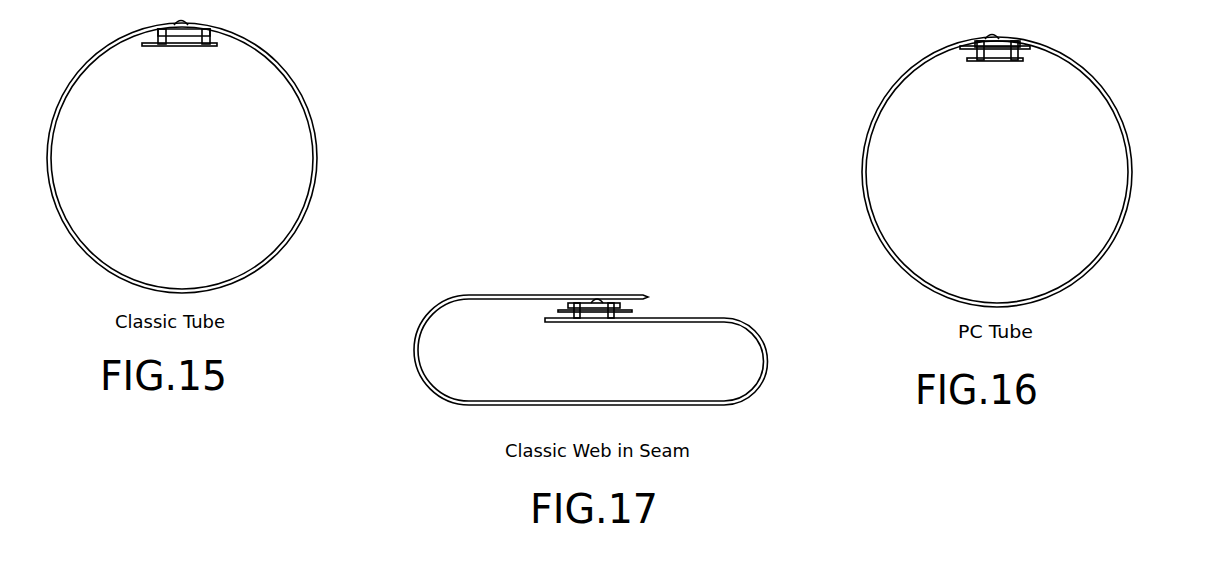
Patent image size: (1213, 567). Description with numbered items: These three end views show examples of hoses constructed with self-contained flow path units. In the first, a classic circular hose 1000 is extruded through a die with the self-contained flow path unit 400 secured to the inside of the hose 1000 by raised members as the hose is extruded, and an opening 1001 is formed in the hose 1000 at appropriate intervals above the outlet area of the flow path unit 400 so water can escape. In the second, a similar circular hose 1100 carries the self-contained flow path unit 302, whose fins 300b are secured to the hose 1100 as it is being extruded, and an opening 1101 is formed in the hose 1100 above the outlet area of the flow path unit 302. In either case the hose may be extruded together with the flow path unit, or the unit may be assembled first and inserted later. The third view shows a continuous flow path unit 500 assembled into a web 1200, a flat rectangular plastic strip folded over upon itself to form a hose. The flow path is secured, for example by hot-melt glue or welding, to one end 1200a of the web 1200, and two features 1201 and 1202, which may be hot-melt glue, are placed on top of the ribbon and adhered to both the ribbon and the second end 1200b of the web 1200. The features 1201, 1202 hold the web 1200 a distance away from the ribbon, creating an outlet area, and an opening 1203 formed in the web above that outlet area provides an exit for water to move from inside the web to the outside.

In FIG. 15, the hose 1000 is at (317, 166).
In FIG. 15, the opening 1001 is at (180, 22).
In FIG. 15, the self-contained flow path unit 400 is at (195, 54).
In FIG. 16, the hose 1100 is at (862, 184).
In FIG. 16, the opening 1101 is at (993, 36).
In FIG. 16, the fins 300b is at (977, 46).
In FIG. 16, the self-contained flow path unit 302 is at (1009, 65).
In FIG. 17, the web 1200 is at (422, 380).
In FIG. 17, the one end of the web 1200a is at (555, 322).
In FIG. 17, the second end of the web 1200b is at (650, 297).
In FIG. 17, the continuous flow path unit 500 is at (574, 282).
In FIG. 17, the feature 1201 is at (567, 304).
In FIG. 17, the feature 1202 is at (617, 306).
In FIG. 17, the opening 1203 is at (596, 302).